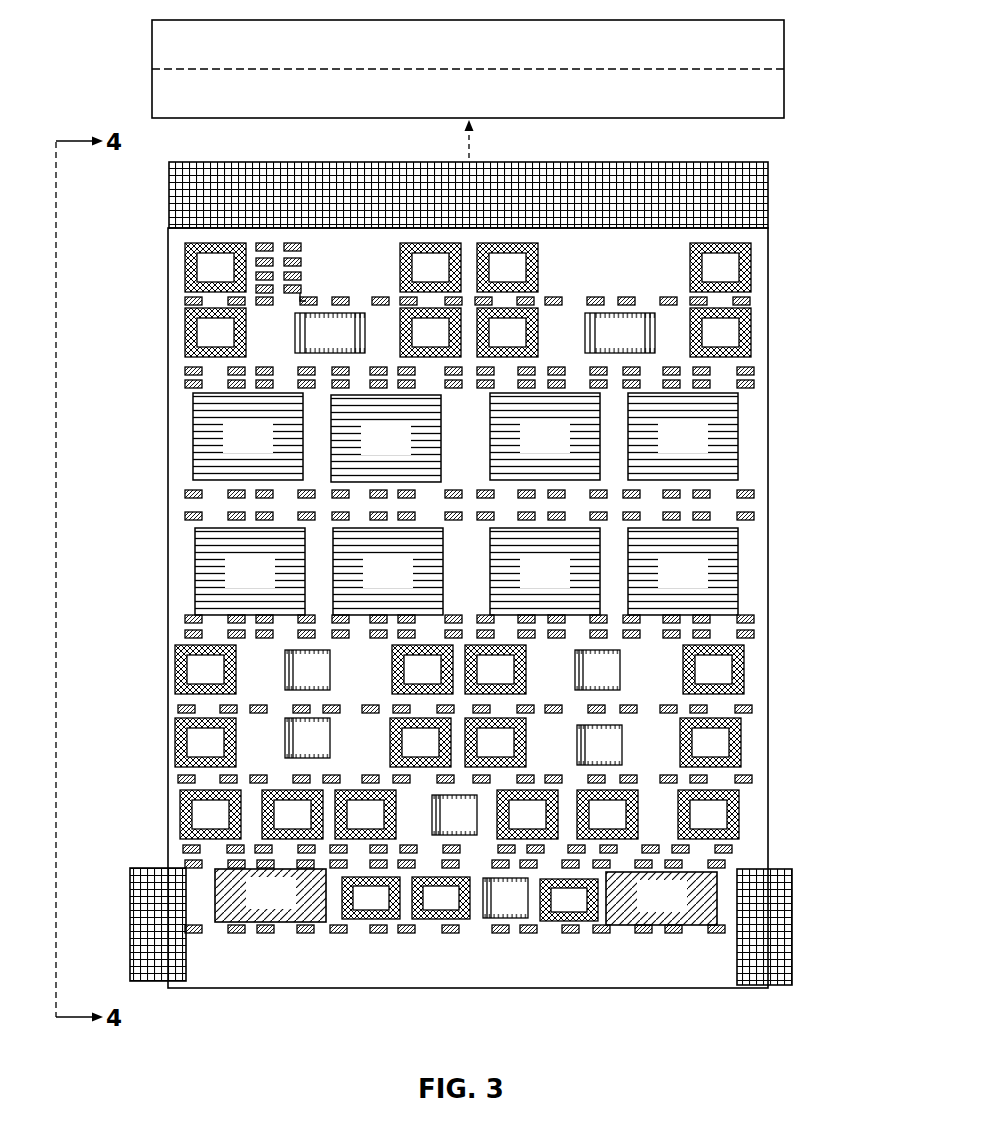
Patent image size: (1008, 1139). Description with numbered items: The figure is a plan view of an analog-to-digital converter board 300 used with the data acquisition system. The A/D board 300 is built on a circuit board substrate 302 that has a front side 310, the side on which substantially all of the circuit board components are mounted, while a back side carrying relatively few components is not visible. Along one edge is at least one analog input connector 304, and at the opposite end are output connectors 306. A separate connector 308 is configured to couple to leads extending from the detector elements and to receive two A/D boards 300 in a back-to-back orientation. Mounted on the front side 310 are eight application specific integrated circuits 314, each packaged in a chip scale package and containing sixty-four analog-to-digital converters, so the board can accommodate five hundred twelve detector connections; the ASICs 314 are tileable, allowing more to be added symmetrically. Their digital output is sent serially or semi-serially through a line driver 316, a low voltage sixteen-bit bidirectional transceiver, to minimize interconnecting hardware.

The analog-to-digital converter board 300 is at (800, 441).
The circuit board substrate 302 is at (755, 553).
The analog input connector 304 is at (760, 200).
The output connector 306 is at (150, 900).
The connector 308 is at (775, 88).
The front side 310 is at (464, 588).
The application specific integrated circuit 314 is at (465, 504).
The line driver 316 is at (466, 897).